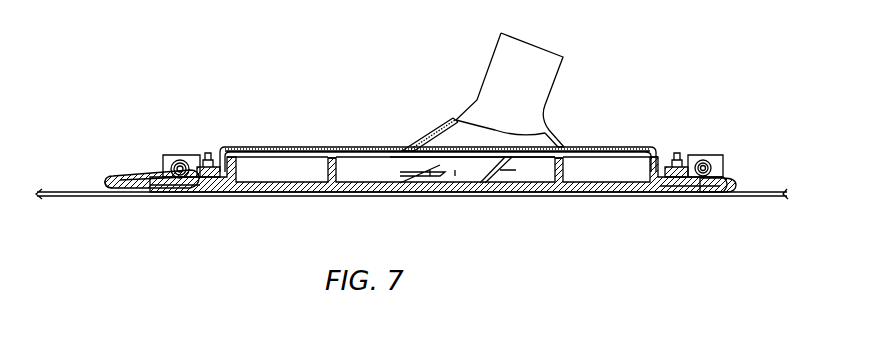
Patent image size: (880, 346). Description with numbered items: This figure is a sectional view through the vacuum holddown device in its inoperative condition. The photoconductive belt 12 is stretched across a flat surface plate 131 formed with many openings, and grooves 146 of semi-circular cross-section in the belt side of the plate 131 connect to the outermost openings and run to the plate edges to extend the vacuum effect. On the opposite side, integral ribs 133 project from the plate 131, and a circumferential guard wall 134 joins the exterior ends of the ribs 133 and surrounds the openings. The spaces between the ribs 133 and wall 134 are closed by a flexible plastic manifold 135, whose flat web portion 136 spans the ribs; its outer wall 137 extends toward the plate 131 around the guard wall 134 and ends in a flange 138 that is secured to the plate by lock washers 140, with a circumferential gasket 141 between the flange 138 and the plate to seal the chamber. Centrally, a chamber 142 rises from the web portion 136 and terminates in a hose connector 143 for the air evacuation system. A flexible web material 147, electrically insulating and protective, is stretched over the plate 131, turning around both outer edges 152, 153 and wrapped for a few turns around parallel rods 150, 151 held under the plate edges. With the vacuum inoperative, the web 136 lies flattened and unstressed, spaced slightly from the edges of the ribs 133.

The photoconductive belt 12 is at (69, 197).
The flat surface plate 131 is at (610, 190).
The ribs 133 is at (420, 183).
The circumferential guard wall 134 is at (237, 162).
The manifold 135 is at (405, 147).
The web portion 136 is at (318, 147).
The wall 137 is at (214, 153).
The flange 138 is at (682, 168).
The lock washers 140 is at (192, 153).
The circumferential gasket 141 is at (185, 152).
The chamber 142 is at (446, 126).
The hose connector 143 is at (560, 59).
The grooves 146 is at (166, 187).
The flexible web material 147 is at (696, 190).
The rod 150 is at (160, 168).
The rod 151 is at (712, 163).
The outer edge 152 is at (108, 180).
The outer edge 153 is at (725, 181).